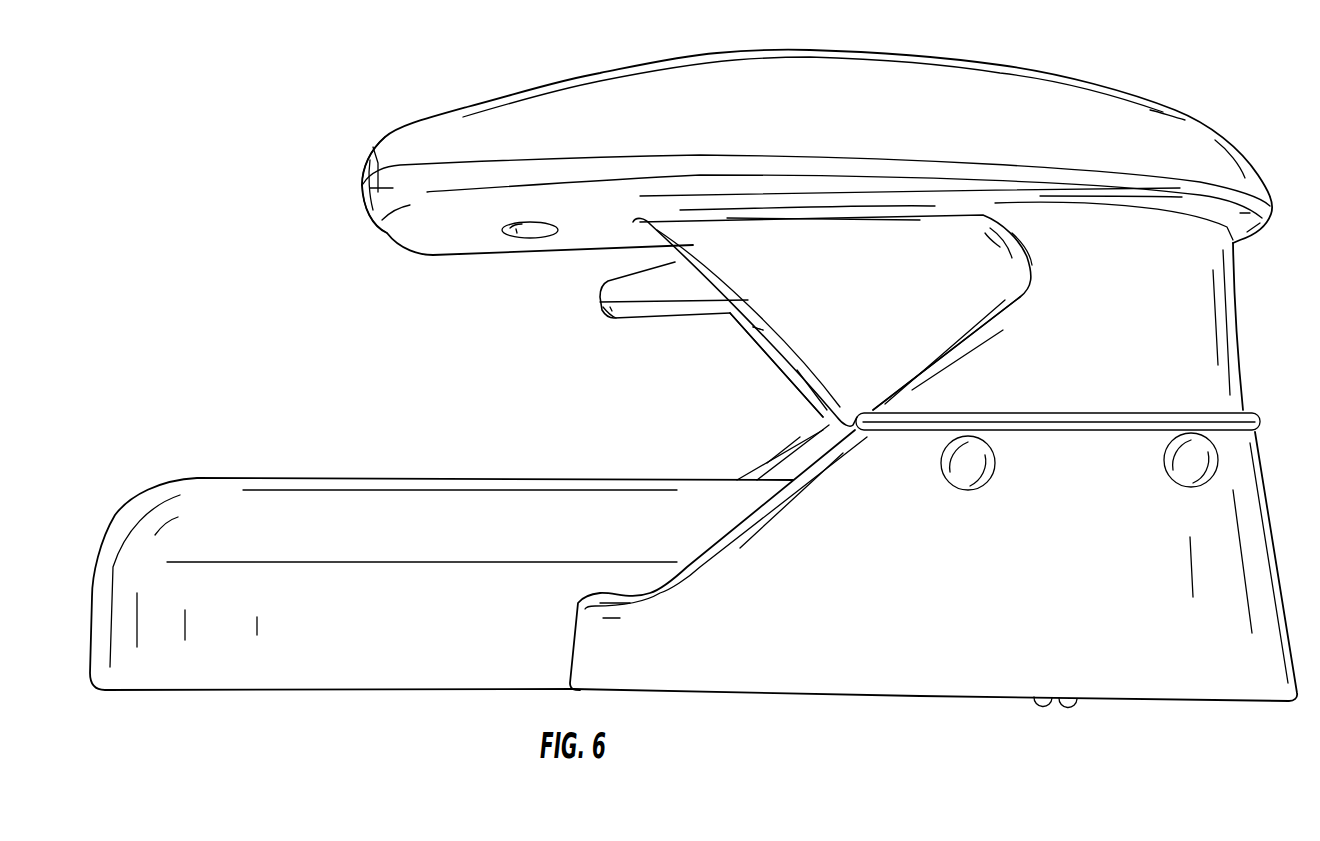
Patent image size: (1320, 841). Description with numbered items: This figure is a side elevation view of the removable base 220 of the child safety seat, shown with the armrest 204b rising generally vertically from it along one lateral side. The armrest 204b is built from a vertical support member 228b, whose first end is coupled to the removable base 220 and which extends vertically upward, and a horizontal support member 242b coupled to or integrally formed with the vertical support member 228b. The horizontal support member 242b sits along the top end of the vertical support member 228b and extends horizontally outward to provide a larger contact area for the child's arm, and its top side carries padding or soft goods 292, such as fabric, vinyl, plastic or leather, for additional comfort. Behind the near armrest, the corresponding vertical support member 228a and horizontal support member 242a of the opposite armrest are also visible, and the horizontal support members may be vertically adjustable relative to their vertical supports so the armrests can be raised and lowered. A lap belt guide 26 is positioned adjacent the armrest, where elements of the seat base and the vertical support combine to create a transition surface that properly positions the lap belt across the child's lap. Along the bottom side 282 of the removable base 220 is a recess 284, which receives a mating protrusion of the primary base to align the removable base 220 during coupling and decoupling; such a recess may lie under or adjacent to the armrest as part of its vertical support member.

The armrest 204b is at (920, 105).
The padding and/or soft goods 292 is at (733, 92).
The horizontal support member 242b is at (362, 185).
The vertical support member 228b is at (1157, 313).
The lap belt guide 26 is at (810, 373).
The vertical support member 228a is at (763, 325).
The horizontal support member 242a is at (647, 313).
The bottom side 282 is at (630, 695).
The removable base 220 is at (450, 490).
The recess 284 is at (1051, 708).